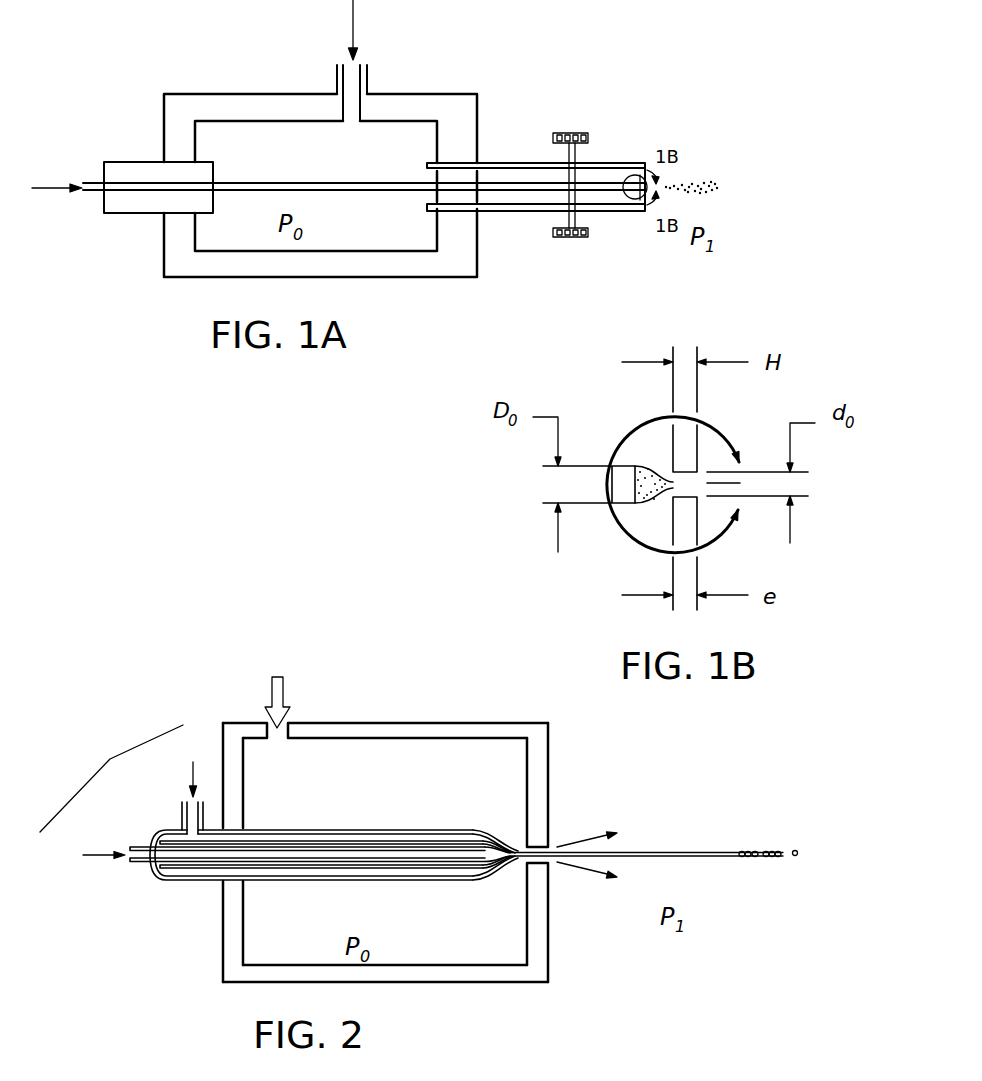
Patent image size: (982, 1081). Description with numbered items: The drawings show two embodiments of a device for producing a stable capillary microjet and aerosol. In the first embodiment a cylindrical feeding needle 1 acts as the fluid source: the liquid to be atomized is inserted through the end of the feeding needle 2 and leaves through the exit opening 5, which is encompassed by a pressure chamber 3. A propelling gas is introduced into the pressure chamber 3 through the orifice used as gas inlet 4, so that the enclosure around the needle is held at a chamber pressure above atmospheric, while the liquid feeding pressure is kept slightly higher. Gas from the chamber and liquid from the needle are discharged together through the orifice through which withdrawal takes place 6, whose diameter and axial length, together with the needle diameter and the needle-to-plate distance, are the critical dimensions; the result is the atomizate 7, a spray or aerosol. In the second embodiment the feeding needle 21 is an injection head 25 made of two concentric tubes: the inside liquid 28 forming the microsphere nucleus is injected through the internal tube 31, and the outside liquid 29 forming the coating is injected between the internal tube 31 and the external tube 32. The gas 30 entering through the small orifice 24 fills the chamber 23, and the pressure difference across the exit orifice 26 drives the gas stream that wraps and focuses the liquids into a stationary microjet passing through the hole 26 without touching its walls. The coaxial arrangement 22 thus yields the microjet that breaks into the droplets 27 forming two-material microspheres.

In FIG. 1A, the feeding needle 1 is at (292, 183).
In FIG. 1A, the end of the feeding needle used to insert the liquid 2 is at (52, 186).
In FIG. 1A, the pressure chamber 3 is at (368, 250).
In FIG. 1A, the orifice used as gas inlet 4 is at (354, 22).
In FIG. 1B, the end of the feeding needle used to evacuate the liquid 5 is at (587, 497).
In FIG. 1B, the orifice through which withdrawal takes place 6 is at (718, 467).
In FIG. 1A, the atomizate 7 is at (730, 198).
In FIG. 2, the feeding needle 21 is at (327, 829).
In FIG. 2, the coaxial feeding arrangement 22 is at (113, 758).
In FIG. 2, the chamber 23 is at (478, 952).
In FIG. 2, the small orifice 24 is at (290, 723).
In FIG. 2, the injection head 25 is at (512, 847).
In FIG. 2, the exit orifice 26 is at (557, 847).
In FIG. 2, the droplets 27 is at (810, 836).
In FIG. 2, the inside liquid 28 is at (86, 855).
In FIG. 2, the outside liquid 29 is at (197, 784).
In FIG. 2, the gas 30 is at (270, 683).
In FIG. 2, the internal tube 31 is at (163, 881).
In FIG. 2, the external tube 32 is at (202, 882).